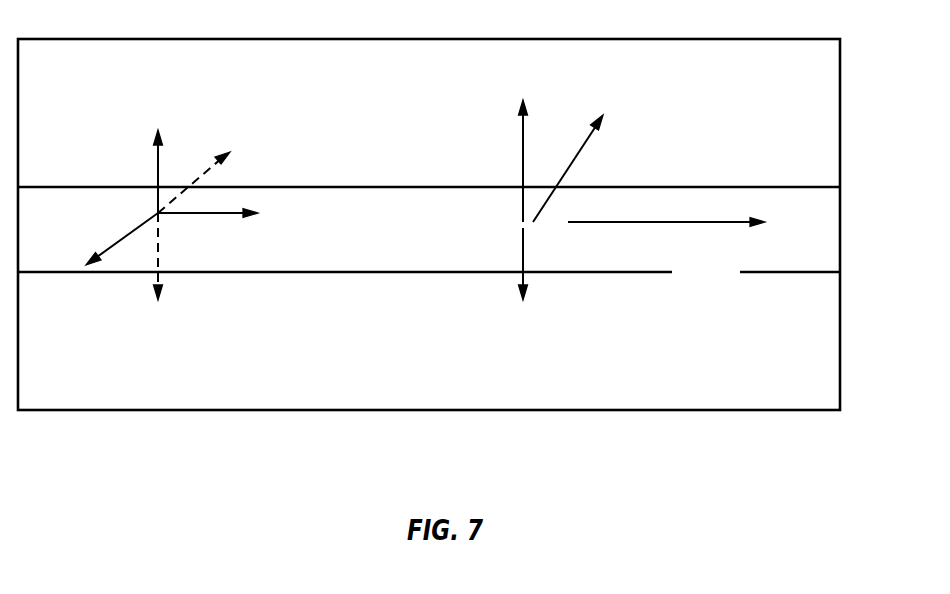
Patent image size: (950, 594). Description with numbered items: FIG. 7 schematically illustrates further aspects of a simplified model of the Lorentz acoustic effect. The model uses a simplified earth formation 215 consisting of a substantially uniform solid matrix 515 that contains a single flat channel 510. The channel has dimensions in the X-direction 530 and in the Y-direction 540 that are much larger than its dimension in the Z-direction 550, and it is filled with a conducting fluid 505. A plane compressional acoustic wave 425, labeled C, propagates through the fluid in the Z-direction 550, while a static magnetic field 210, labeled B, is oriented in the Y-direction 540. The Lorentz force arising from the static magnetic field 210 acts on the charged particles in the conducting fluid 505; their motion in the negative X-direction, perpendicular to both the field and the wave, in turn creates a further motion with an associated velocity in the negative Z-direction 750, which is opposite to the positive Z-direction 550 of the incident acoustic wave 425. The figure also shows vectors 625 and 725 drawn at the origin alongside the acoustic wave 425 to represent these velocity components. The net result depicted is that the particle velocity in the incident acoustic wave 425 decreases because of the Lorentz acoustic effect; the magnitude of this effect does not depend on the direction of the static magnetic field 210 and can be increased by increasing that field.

The conducting fluid 505 is at (822, 208).
The solid matrix 515 is at (303, 80).
The single flat channel 510 is at (410, 242).
The earth formation 215 is at (728, 284).
The static magnetic field 210 is at (665, 220).
The Z-direction 550 is at (157, 162).
The Y-direction 540 is at (233, 216).
The X-direction 530 is at (140, 222).
The negative Z-direction 750 is at (160, 260).
The plane compressional acoustic wave 425 is at (520, 131).
The vector V3 725 is at (520, 248).
The vector V2 625 is at (573, 168).